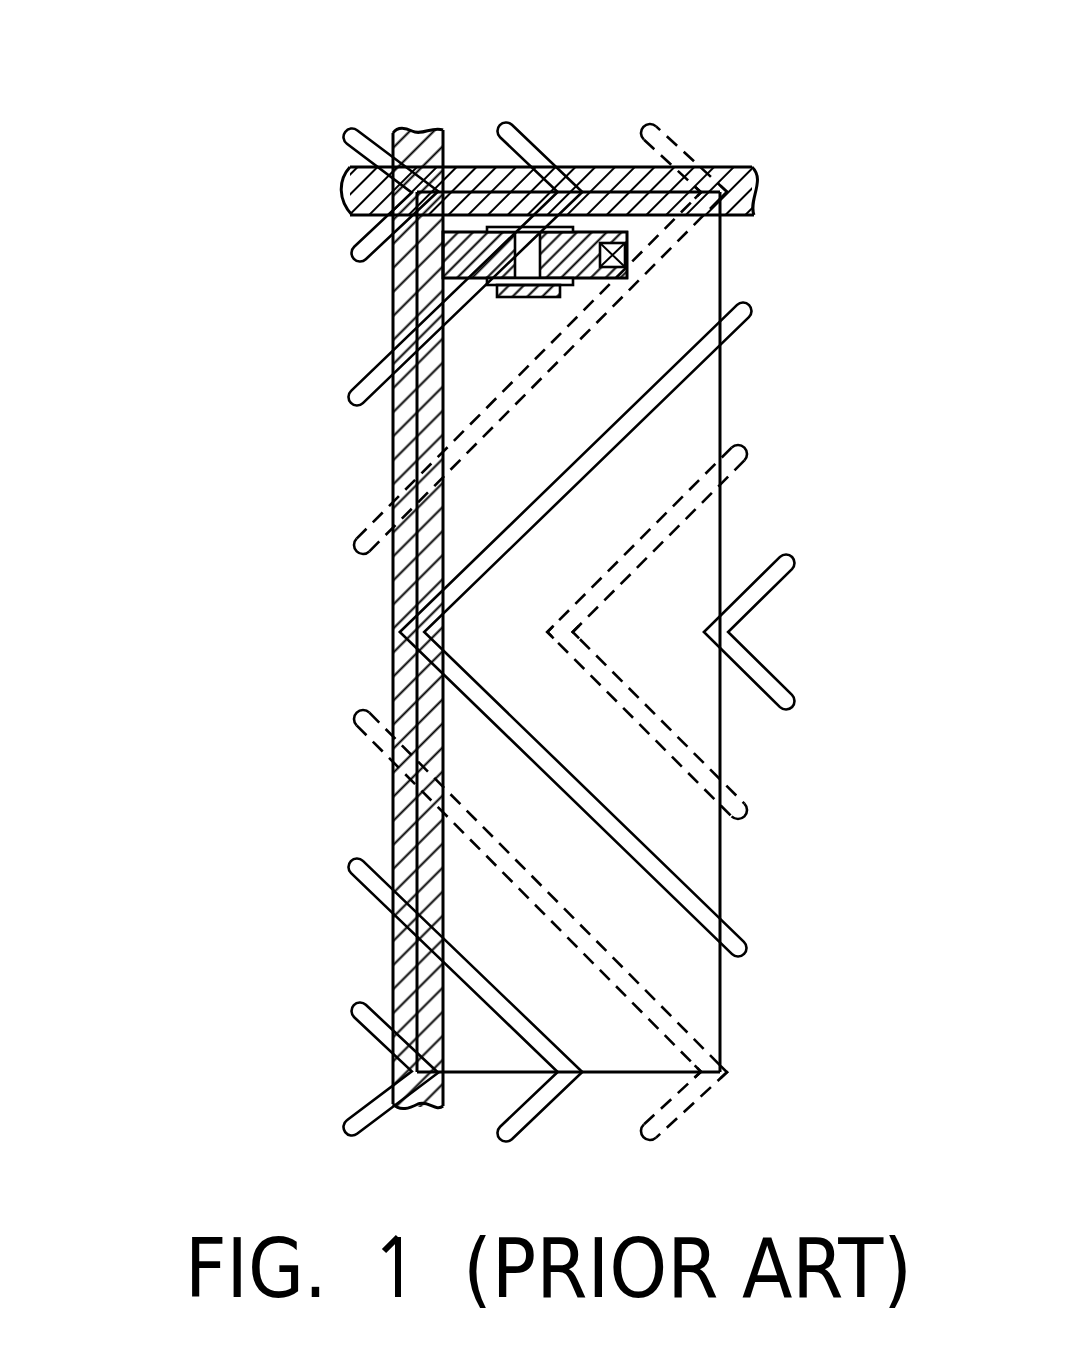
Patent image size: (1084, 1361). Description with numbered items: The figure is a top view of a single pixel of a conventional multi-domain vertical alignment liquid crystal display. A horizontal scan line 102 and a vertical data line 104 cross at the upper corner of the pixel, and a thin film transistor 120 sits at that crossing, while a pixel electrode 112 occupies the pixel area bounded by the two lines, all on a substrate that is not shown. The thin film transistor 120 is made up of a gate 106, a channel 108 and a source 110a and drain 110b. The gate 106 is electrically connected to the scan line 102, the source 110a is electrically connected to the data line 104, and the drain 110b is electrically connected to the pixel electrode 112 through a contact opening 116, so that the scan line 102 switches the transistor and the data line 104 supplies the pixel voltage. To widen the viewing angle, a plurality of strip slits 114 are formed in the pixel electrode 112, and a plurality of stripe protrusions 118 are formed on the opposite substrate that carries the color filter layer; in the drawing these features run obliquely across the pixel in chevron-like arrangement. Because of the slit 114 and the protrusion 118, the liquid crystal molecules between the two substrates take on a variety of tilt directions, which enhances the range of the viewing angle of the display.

The scan line 102 is at (753, 178).
The data line 104 is at (409, 130).
The gate 106 is at (530, 297).
The channel 108 is at (487, 281).
The source 110a is at (490, 250).
The drain 110b is at (503, 226).
The pixel electrode 112 is at (742, 462).
The strip slit 114 is at (633, 282).
The contact opening 116 is at (628, 245).
The stripe protrusion 118 is at (741, 320).
The thin film transistor 120 is at (337, 303).